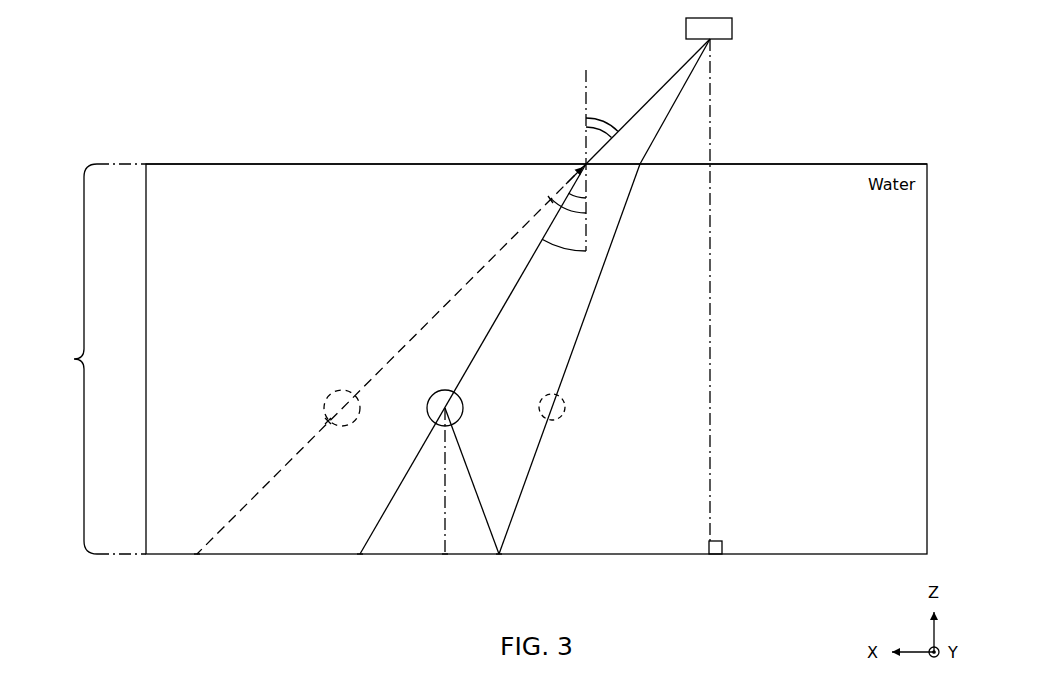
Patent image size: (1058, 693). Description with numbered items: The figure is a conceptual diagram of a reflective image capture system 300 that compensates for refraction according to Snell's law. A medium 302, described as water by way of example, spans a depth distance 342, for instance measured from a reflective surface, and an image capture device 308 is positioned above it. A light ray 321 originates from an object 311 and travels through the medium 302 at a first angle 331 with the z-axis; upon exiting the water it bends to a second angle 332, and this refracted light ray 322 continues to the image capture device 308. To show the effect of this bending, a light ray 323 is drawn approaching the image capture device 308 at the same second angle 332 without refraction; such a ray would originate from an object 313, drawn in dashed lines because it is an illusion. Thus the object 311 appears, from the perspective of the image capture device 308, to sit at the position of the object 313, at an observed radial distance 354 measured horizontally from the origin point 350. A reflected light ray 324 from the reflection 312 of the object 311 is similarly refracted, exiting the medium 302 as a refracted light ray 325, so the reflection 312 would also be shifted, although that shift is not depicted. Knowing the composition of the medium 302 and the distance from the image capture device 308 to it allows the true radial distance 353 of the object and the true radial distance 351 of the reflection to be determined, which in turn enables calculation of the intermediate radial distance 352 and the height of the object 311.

The reflective image capture system 300 is at (902, 50).
The medium 302 is at (540, 163).
The image capture device 308 is at (733, 32).
The object 311 is at (434, 414).
The reflection 312 is at (563, 417).
The object 313 is at (334, 394).
The light ray 321 is at (497, 338).
The refracted light ray 322 is at (660, 84).
The light ray 323 is at (428, 306).
The reflected light ray 324 is at (592, 342).
The refracted light ray 325 is at (668, 140).
The angle θ1 331 is at (547, 256).
The angle θ2 332 is at (598, 116).
The distance z2 342 is at (93, 359).
The origin r0 350 is at (715, 558).
The radial distance r1 351 is at (503, 558).
The radial distance r2 352 is at (449, 558).
The radial distance r3 353 is at (357, 558).
The observed radial distance r3' 354 is at (194, 558).